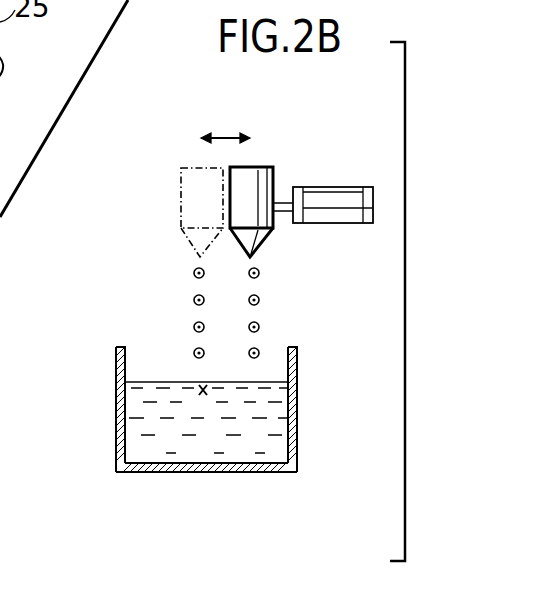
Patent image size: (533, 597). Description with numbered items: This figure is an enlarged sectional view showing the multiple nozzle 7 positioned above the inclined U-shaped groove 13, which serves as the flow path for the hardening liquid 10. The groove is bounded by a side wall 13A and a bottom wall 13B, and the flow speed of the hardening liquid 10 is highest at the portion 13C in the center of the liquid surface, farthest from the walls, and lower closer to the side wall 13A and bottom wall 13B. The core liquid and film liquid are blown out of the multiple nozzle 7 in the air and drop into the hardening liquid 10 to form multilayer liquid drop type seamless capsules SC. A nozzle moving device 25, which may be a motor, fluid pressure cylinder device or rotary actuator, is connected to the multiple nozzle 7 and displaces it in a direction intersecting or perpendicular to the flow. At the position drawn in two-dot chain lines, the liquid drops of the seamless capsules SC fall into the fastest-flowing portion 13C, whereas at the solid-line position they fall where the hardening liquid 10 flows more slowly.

The multiple nozzle 7 is at (190, 168).
The nozzle moving device 25 is at (343, 188).
The seamless capsule SC is at (259, 301).
The U-shaped groove 13 is at (298, 410).
The side wall 13A is at (117, 410).
The bottom wall 13B is at (198, 473).
The portion in the center of the liquid surface portion 13C is at (200, 383).
The hardening liquid 10 is at (266, 437).